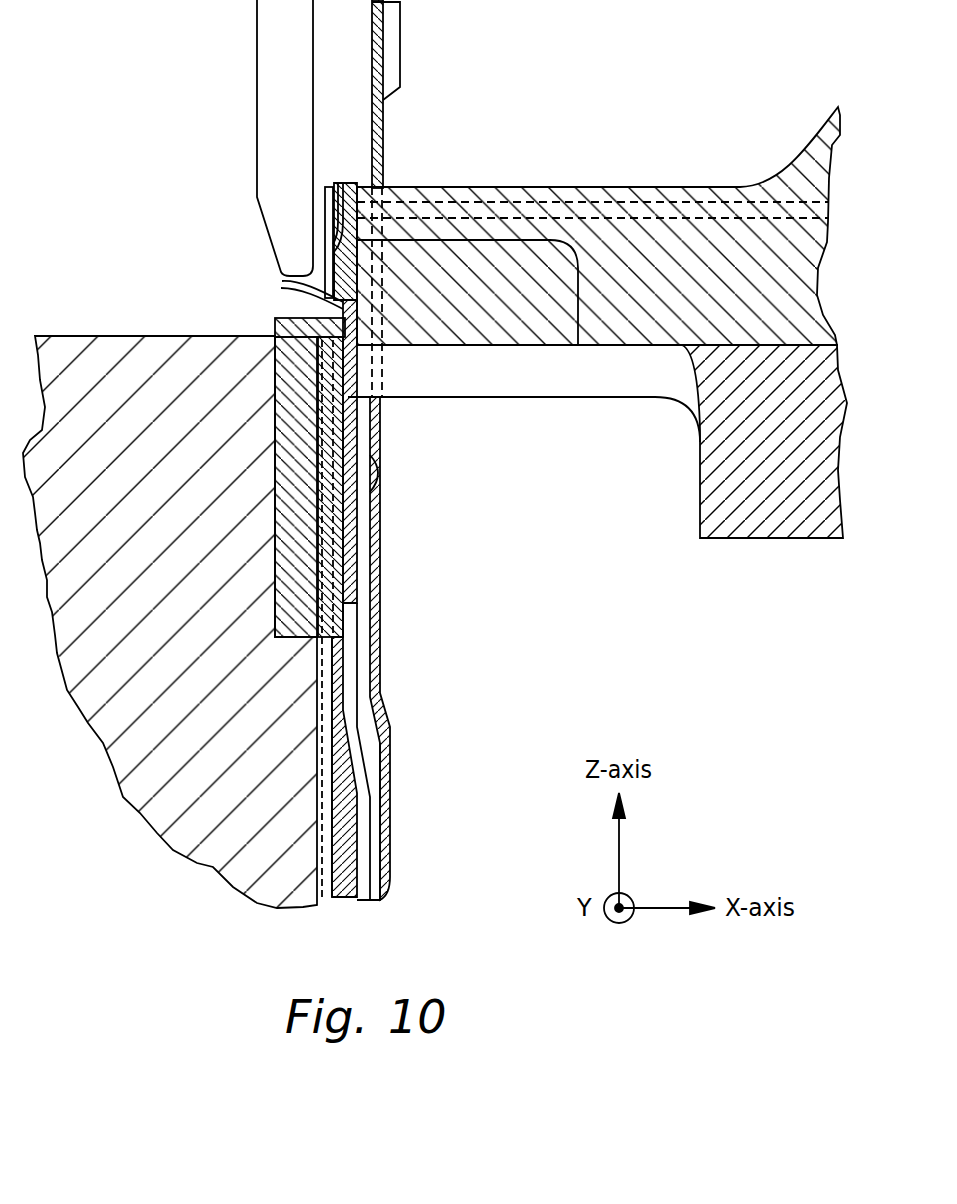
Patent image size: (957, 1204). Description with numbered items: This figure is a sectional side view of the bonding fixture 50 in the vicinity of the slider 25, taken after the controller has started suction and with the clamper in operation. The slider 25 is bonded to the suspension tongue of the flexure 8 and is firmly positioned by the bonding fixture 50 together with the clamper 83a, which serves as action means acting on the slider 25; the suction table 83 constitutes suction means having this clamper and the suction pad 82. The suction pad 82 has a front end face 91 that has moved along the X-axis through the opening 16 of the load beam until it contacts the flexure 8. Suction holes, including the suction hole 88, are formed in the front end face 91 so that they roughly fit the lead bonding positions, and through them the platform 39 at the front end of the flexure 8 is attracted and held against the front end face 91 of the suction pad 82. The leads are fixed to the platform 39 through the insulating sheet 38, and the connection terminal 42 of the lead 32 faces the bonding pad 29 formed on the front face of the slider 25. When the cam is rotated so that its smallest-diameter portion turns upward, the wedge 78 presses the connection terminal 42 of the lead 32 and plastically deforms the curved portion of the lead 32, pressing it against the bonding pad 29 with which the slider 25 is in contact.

The flexure 8 is at (365, 833).
The opening 16 is at (382, 428).
The slider 25 is at (297, 431).
The bonding pad 29 is at (280, 323).
The lead 32 is at (325, 212).
The insulating sheet 38 is at (316, 184).
The platform 39 is at (349, 183).
The connection terminal 42 is at (281, 292).
The bonding fixture 50 is at (134, 741).
The wedge 78 is at (283, 244).
The suction pad 82 is at (407, 197).
The suction table 83 is at (772, 523).
The clamper 83a is at (516, 380).
The suction hole 88 is at (450, 210).
The front end face 91 is at (380, 290).